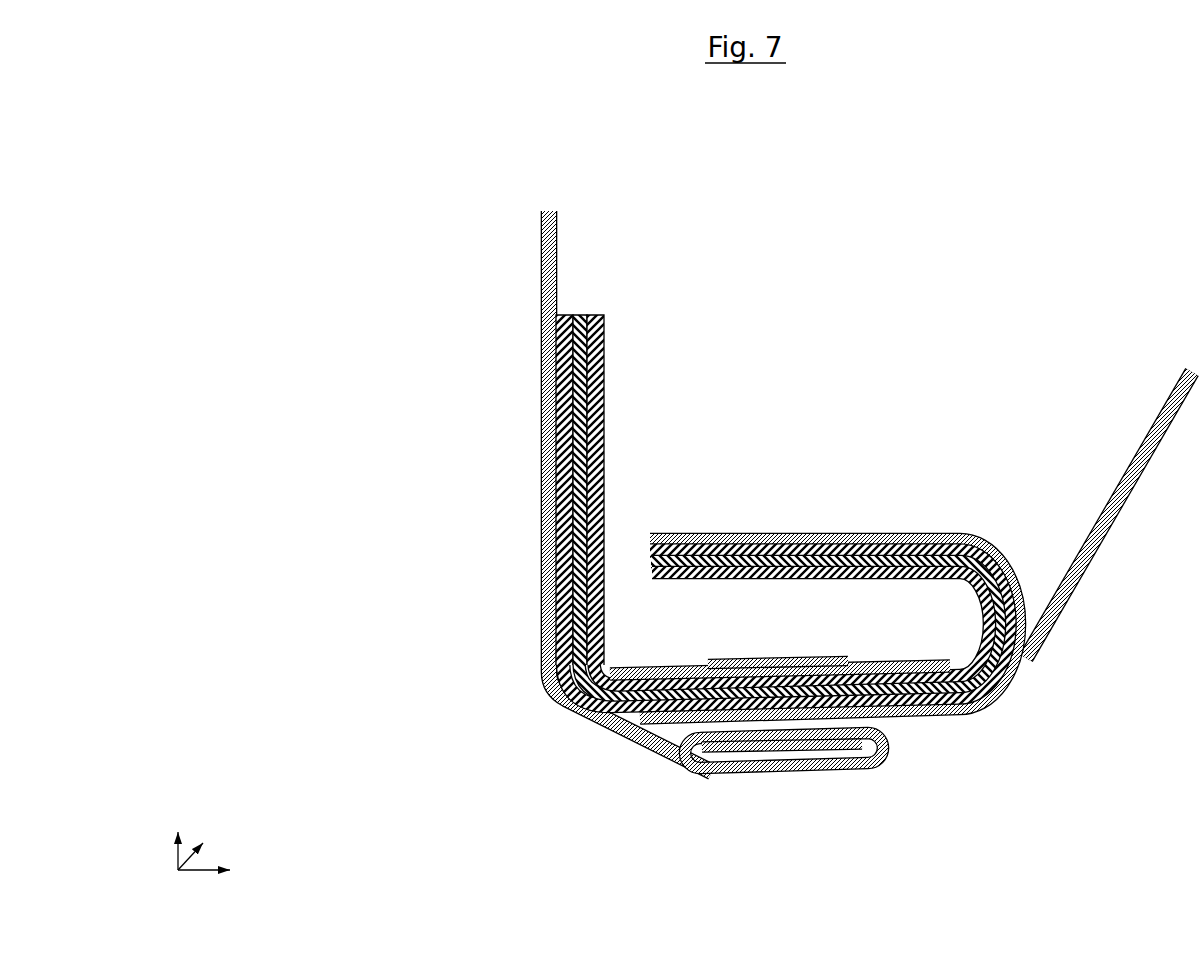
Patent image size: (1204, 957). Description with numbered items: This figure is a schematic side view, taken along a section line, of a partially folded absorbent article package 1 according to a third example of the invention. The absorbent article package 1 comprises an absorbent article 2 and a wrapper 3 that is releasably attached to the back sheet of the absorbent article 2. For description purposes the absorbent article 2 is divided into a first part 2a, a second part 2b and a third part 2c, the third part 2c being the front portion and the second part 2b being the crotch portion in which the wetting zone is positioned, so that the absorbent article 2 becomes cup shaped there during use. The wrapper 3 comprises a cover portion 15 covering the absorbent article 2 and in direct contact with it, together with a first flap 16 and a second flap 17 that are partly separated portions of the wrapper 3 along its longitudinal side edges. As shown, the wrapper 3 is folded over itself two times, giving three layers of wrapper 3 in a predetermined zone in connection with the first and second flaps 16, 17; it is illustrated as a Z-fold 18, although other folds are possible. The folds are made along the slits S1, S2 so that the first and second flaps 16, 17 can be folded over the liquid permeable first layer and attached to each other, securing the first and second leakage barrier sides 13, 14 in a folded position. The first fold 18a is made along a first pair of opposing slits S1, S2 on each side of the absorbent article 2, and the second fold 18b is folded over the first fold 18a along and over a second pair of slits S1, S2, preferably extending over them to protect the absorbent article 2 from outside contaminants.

The absorbent article package 1 is at (428, 225).
The absorbent article 2 is at (481, 222).
The first part 2a is at (855, 532).
The second part 2b is at (935, 723).
The third part 2c is at (539, 494).
The wrapper 3 is at (541, 307).
The first leakage barrier side 13 is at (818, 787).
The second leakage barrier side 14 is at (858, 746).
The cover portion 15 is at (537, 688).
The first flap 16 is at (766, 531).
The second flap 17 is at (752, 664).
The Z-fold 18 is at (767, 807).
The first fold 18a is at (767, 807).
The second fold 18b is at (771, 772).
The slit S1 is at (700, 724).
The slit S2 is at (880, 738).